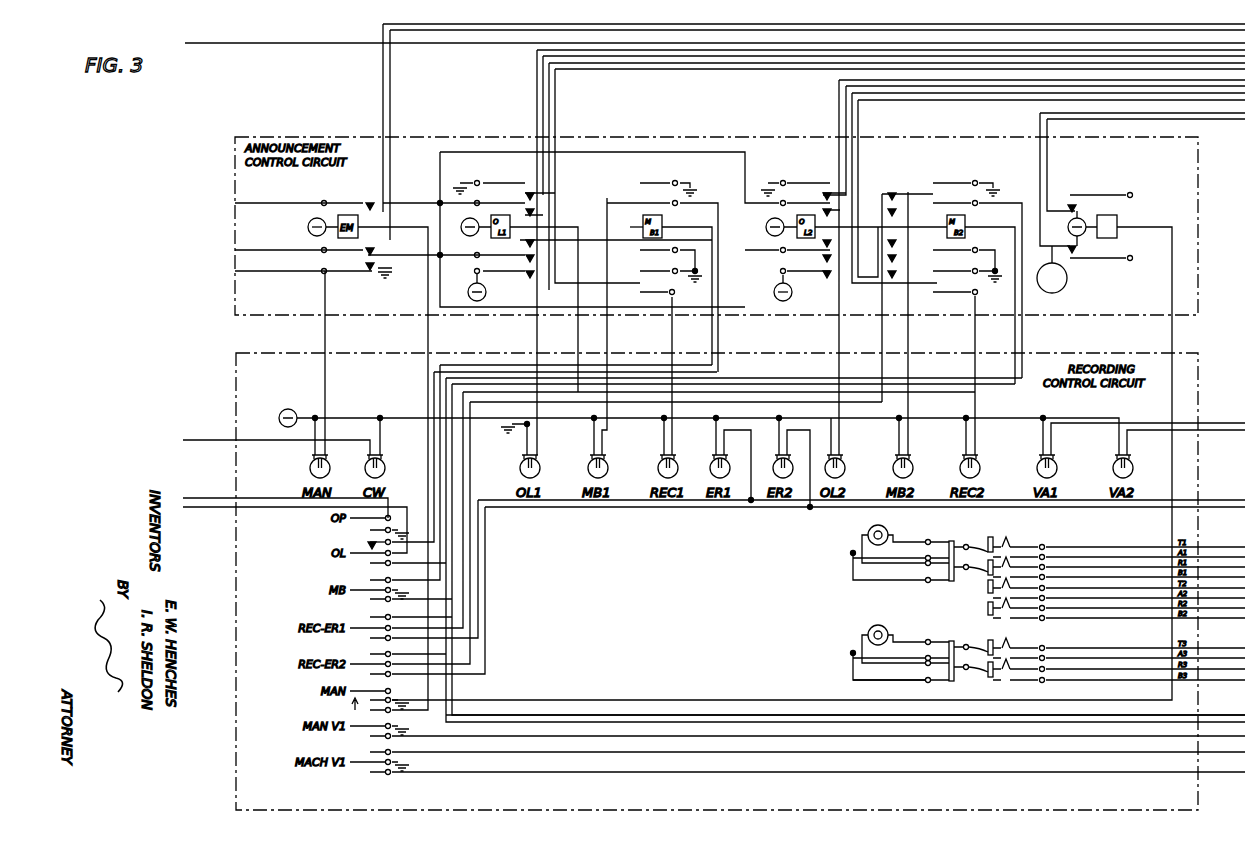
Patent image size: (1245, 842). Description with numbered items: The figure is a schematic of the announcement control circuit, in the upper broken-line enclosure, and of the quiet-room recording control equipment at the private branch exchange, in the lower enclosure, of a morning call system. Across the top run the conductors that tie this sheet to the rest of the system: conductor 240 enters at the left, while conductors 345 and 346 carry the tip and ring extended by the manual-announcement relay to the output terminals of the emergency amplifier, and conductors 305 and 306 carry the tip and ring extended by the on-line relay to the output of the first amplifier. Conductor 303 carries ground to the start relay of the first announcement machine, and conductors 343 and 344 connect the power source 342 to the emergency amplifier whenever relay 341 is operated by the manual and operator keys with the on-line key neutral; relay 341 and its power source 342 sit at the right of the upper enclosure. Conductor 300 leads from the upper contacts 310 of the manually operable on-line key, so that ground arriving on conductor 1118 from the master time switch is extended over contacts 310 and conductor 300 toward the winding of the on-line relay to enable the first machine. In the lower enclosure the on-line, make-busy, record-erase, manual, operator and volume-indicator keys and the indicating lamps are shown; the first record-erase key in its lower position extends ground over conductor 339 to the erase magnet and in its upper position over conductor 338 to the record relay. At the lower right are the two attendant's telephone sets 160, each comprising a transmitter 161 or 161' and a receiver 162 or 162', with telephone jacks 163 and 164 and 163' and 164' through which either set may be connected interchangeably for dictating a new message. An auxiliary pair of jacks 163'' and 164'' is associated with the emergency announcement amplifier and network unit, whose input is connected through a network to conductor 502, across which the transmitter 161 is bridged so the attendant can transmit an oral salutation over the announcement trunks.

The supply conductor 240 is at (262, 50).
The conductor 345 is at (383, 75).
The conductor 346 is at (390, 73).
The conductor 305 is at (537, 75).
The conductor 306 is at (543, 97).
The conductor 303 is at (549, 117).
The conductor 343 is at (1040, 118).
The conductor 344 is at (1047, 152).
The relay 341 is at (1117, 222).
The power source 342 is at (1068, 290).
The conductor 300 is at (712, 333).
The conductor 1118 is at (276, 512).
The contacts 310 is at (366, 550).
The conductor 338 is at (580, 710).
The conductor 339 is at (1220, 514).
The transmitter 161 is at (858, 529).
The receiver 162 is at (871, 559).
The transmitter 161' is at (859, 622).
The receiver 162' is at (868, 660).
The attendant's telephone set 160 is at (903, 585).
The telephone jack 163 is at (977, 541).
The telephone jack 164 is at (952, 552).
The telephone jack 163' is at (968, 591).
The telephone jack 164' is at (968, 613).
The auxiliary jack 163'' is at (974, 639).
The auxiliary jack 164'' is at (974, 681).
The conductor 502 is at (1122, 648).